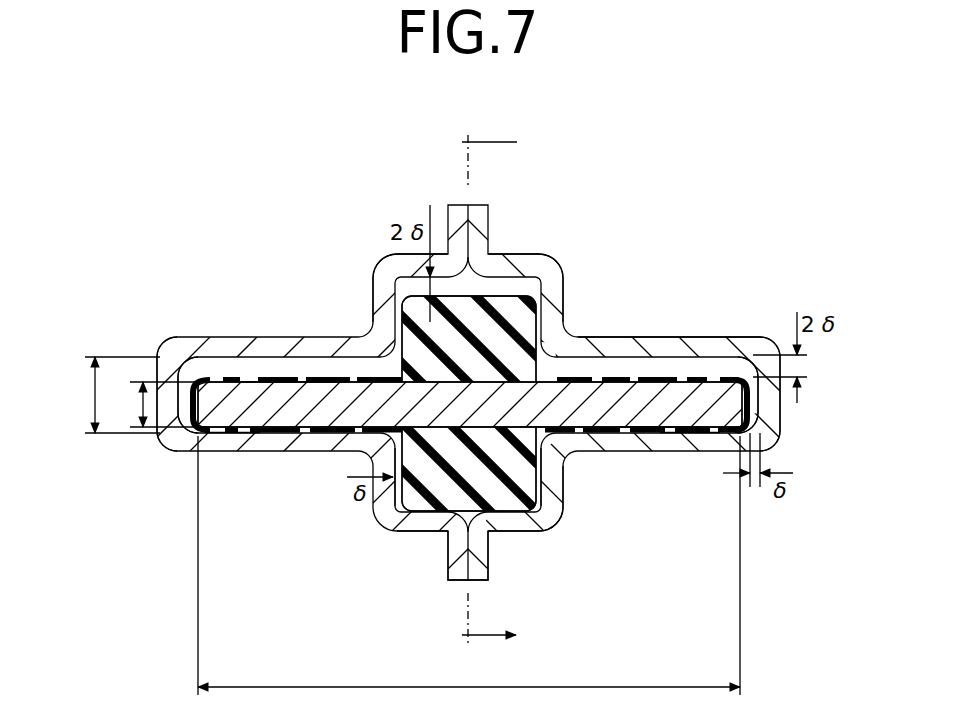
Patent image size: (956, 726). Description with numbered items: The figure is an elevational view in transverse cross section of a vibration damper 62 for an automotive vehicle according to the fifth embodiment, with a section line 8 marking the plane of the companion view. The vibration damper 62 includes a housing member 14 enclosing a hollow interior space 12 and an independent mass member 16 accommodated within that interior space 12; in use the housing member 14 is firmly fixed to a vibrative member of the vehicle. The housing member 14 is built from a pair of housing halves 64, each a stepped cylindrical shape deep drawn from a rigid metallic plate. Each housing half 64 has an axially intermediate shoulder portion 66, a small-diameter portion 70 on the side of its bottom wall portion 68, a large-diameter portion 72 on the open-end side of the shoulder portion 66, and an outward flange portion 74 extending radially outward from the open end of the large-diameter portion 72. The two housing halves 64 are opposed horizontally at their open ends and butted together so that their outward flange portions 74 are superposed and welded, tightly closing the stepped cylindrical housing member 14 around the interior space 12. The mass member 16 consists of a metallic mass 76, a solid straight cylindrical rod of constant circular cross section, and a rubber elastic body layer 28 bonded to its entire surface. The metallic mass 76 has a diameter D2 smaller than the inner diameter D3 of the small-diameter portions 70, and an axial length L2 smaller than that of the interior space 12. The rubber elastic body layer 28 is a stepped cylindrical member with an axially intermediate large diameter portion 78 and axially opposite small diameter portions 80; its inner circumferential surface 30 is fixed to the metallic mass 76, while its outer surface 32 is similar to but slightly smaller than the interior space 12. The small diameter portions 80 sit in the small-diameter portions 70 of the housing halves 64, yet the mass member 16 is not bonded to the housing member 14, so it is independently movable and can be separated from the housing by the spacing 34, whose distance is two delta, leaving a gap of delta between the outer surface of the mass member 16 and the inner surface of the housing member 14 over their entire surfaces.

The section line 8- 8 is at (489, 388).
The interior space 12 is at (548, 272).
The housing member 14 is at (377, 261).
The mass member 16 is at (653, 374).
The rubber elastic body layer 28 is at (530, 292).
The inner circumferential surface 30 is at (602, 418).
The outer surface 32 is at (268, 380).
The spacing 34 is at (320, 378).
The vibration damper 62 is at (604, 189).
The housing half 64 is at (386, 507).
The shoulder portion 66 is at (558, 319).
The bottom wall portion 68 is at (167, 375).
The small-diameter portion 70 is at (741, 334).
The large-diameter portion 72 is at (416, 538).
The outward flange portion 74 is at (448, 583).
The metallic mass 76 is at (652, 411).
The large diameter portion 78 is at (543, 520).
The small diameter portion 80 is at (227, 434).
The axial length L2 is at (469, 577).
The diameter D2 is at (151, 404).
The inner diameter D3 is at (109, 395).